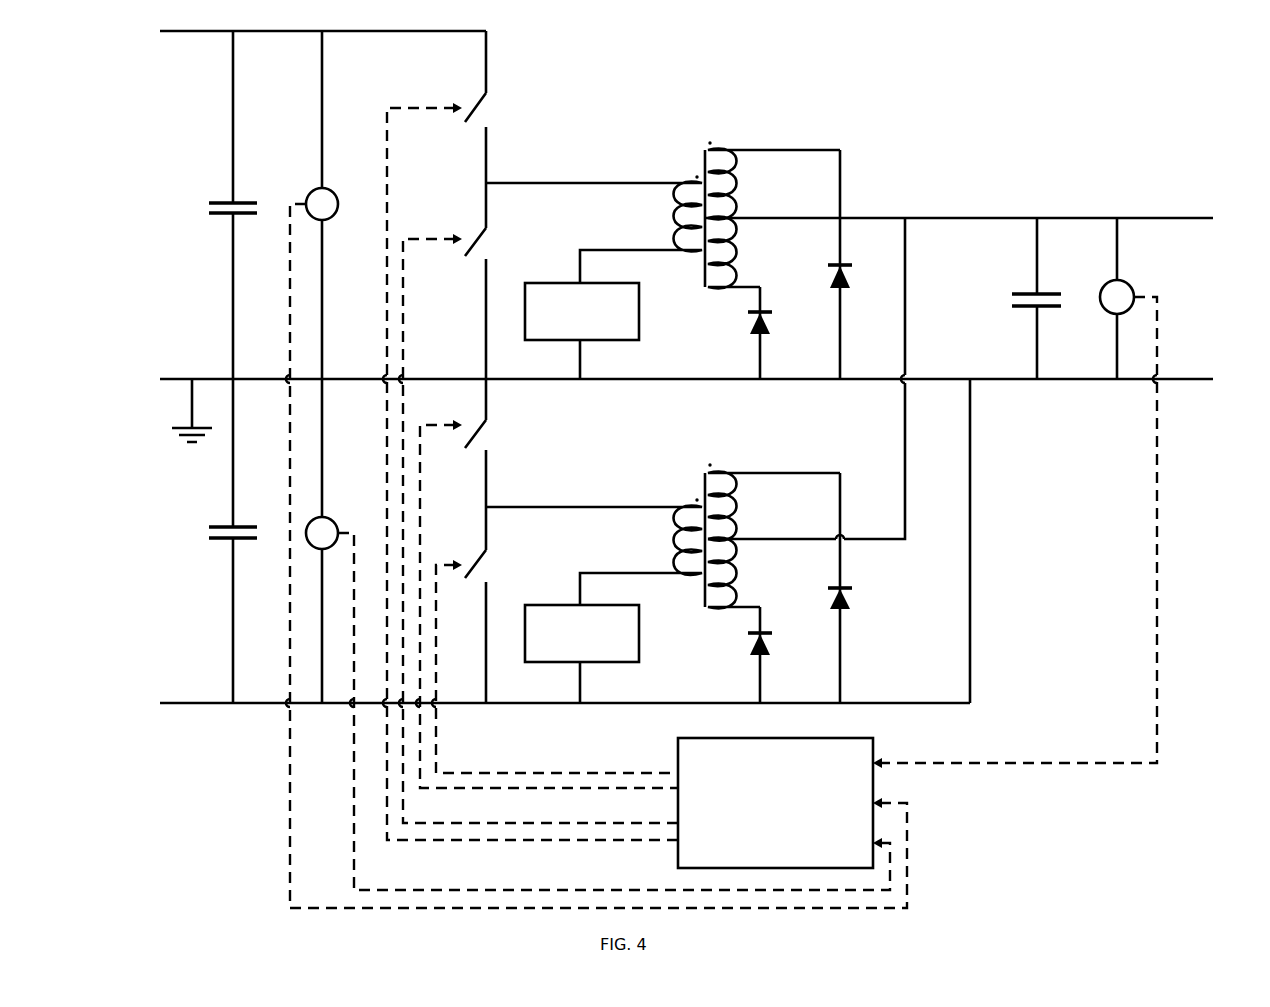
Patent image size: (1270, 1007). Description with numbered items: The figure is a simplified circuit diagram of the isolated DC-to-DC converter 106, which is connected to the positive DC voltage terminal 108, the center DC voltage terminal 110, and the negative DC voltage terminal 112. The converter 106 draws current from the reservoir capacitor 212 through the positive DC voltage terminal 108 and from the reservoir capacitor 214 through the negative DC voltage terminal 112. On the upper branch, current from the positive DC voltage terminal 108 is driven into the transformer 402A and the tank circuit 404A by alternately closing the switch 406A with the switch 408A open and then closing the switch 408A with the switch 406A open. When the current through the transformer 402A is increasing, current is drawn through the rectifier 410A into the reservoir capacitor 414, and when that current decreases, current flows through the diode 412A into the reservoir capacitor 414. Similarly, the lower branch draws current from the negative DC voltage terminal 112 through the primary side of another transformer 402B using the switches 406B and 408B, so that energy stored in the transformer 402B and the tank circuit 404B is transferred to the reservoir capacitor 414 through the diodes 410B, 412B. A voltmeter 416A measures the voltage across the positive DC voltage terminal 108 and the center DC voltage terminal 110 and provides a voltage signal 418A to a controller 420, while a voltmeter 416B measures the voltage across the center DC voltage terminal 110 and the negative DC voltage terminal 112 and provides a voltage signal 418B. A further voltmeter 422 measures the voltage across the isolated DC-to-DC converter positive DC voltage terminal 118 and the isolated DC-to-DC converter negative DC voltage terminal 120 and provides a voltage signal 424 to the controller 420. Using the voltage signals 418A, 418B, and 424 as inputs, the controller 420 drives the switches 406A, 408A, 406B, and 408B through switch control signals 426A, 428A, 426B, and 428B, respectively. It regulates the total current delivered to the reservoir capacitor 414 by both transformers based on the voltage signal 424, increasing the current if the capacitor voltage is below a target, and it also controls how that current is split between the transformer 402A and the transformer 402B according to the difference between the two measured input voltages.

The isolated DC-to-DC converter 106 is at (110, 92).
The positive DC voltage terminal 108 is at (178, 33).
The center DC voltage terminal 110 is at (172, 378).
The negative DC voltage terminal 112 is at (175, 701).
The isolated DC-to-DC converter positive DC voltage terminal 118 is at (1213, 218).
The isolated DC-to-DC converter negative DC voltage terminal 120 is at (1213, 379).
The reservoir capacitor 212 is at (216, 202).
The reservoir capacitor 214 is at (216, 526).
The transformer 402A is at (672, 238).
The transformer 402B is at (672, 563).
The tank circuit 404A is at (540, 283).
The tank circuit 404B is at (540, 605).
The switch 406A is at (480, 100).
The switch 406B is at (480, 423).
The switch 408A is at (480, 231).
The switch 408B is at (480, 553).
The rectifier 410A is at (752, 331).
The diode 410B is at (752, 652).
The diode 412A is at (833, 287).
The diode 412B is at (833, 608).
The reservoir capacitor 414 is at (1027, 291).
The voltmeter 416A is at (310, 195).
The voltmeter 416B is at (354, 500).
The voltage signal 418A is at (287, 285).
The voltage signal 418B is at (352, 754).
The controller 420 is at (708, 738).
The voltmeter 422 is at (1102, 287).
The voltage signal 424 is at (1158, 510).
The switch control signal 426A is at (386, 158).
The switch control signal 426B is at (419, 498).
The switch control signal 428A is at (403, 326).
The switch control signal 428B is at (436, 657).